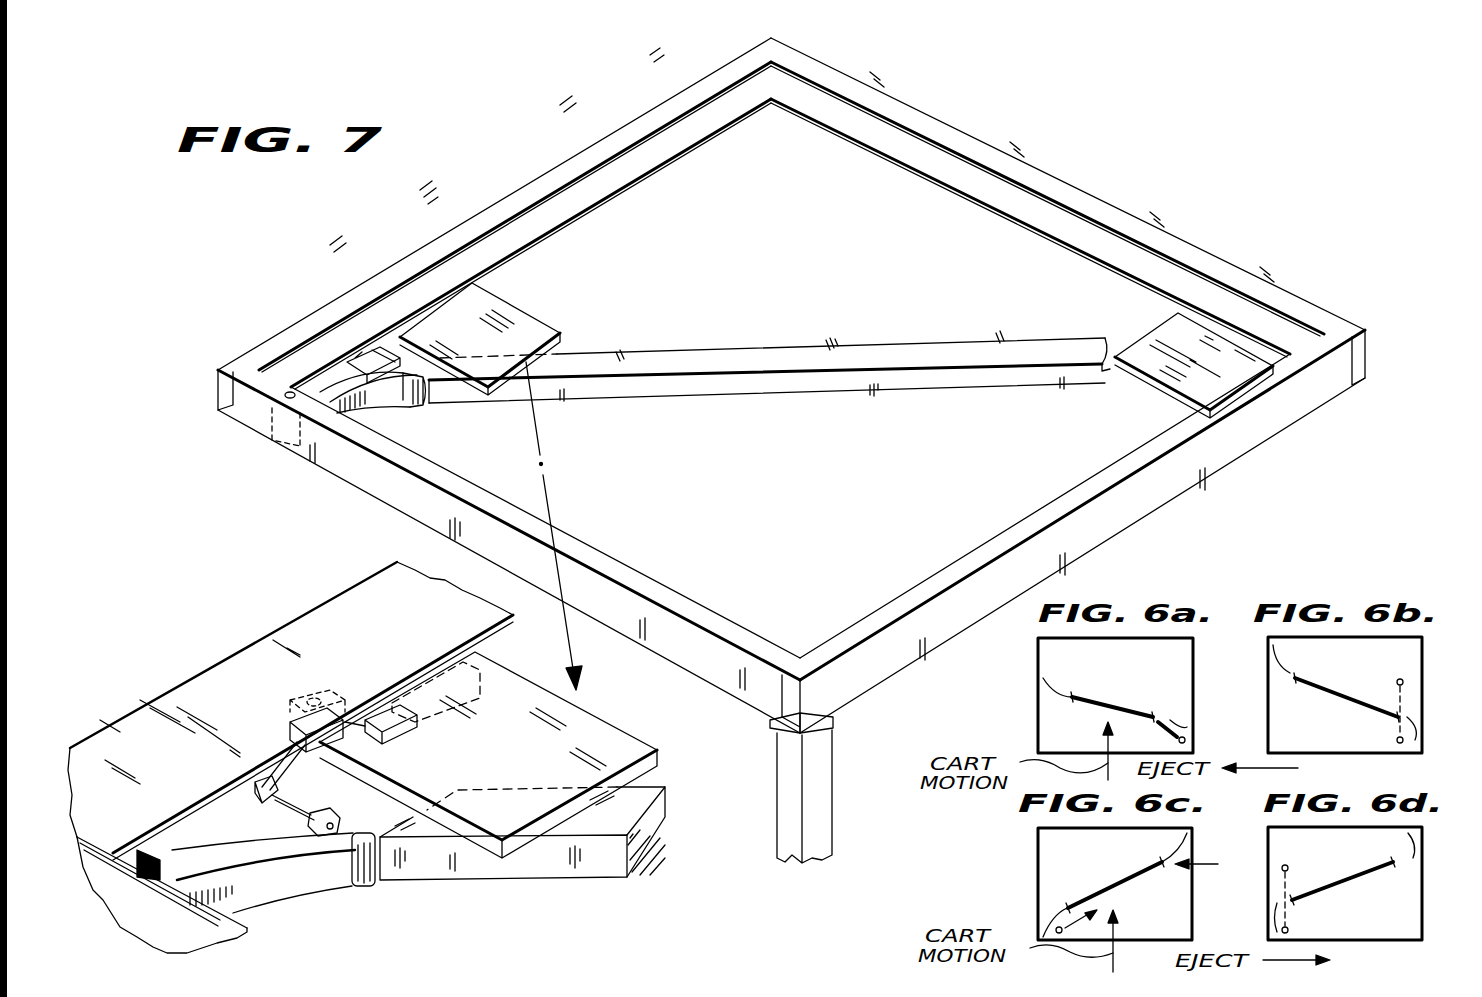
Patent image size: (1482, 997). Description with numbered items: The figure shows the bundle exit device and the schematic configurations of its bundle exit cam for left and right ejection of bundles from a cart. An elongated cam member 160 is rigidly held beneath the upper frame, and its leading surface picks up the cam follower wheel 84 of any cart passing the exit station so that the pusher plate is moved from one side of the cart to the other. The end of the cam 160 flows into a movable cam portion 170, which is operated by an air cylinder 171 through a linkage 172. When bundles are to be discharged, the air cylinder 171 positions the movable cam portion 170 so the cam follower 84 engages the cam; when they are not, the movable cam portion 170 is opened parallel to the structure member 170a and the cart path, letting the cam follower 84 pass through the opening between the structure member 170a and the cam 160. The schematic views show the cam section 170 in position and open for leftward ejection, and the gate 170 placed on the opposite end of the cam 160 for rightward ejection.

In FIG. 7, the cam member 160 is at (810, 345).
In FIG. 6A, the cam member 160 is at (1108, 705).
In FIG. 6B, the cam member 160 is at (1336, 683).
In FIG. 6C, the cam member 160 is at (1125, 863).
In FIG. 6D, the cam member 160 is at (1352, 869).
In FIG. 7, the movable cam portion 170 is at (395, 412).
In FIG. 6A, the movable cam portion 170 is at (1172, 718).
In FIG. 6B, the movable cam portion 170 is at (1418, 728).
In FIG. 6C, the movable cam portion 170 is at (1052, 925).
In FIG. 6D, the movable cam portion 170 is at (1277, 917).
In FIG. 7, the structure member 170a is at (428, 248).
In FIG. 7, the air cylinder 171 is at (437, 716).
In FIG. 7, the linkage 172 is at (352, 355).
In FIG. 6A, the cam follower wheel 84 is at (1187, 740).
In FIG. 6B, the cam follower wheel 84 is at (1397, 682).
In FIG. 6C, the cam follower wheel 84 is at (1063, 931).
In FIG. 6D, the cam follower wheel 84 is at (1288, 867).